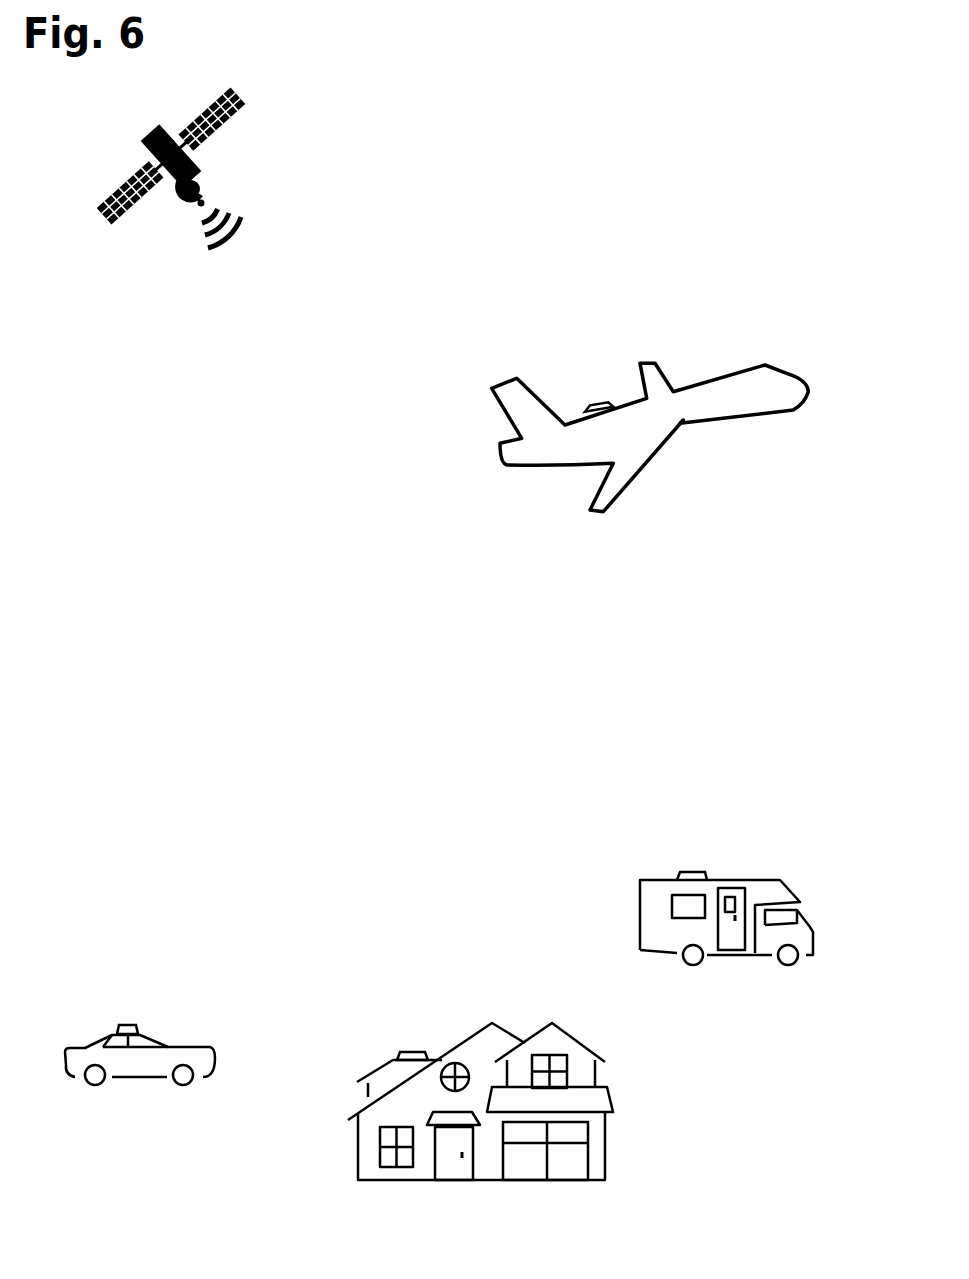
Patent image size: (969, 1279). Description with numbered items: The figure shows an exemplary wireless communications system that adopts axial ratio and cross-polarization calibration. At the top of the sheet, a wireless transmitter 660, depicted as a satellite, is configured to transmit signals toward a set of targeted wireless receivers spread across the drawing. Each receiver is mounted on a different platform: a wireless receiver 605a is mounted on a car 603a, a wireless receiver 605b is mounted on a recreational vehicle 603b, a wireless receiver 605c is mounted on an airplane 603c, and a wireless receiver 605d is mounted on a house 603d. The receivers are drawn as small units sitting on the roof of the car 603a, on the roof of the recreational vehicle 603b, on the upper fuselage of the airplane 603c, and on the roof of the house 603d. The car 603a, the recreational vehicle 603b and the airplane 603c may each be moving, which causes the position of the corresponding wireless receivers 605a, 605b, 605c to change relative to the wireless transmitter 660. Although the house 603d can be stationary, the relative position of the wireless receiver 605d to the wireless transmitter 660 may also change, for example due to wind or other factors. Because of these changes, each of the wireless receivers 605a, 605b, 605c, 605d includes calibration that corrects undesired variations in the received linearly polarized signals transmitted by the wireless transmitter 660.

The wireless transmitter 660 is at (141, 135).
The car 603a is at (75, 1048).
The recreational vehicle 603b is at (782, 879).
The airplane 603c is at (787, 372).
The house 603d is at (648, 1072).
The wireless receiver 605a is at (133, 1022).
The wireless receiver 605b is at (693, 870).
The wireless receiver 605c is at (596, 403).
The wireless receiver 605d is at (408, 1048).